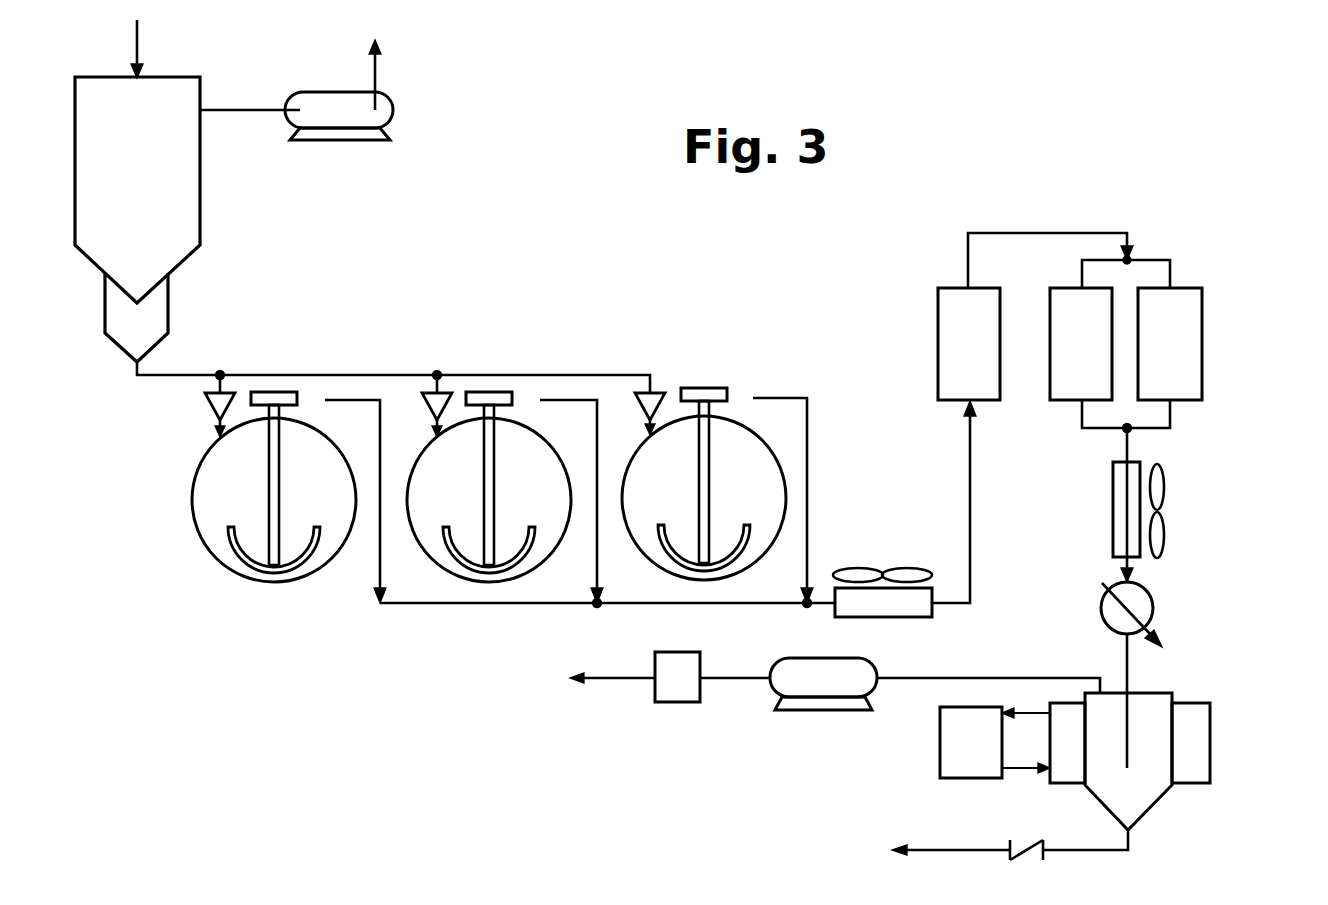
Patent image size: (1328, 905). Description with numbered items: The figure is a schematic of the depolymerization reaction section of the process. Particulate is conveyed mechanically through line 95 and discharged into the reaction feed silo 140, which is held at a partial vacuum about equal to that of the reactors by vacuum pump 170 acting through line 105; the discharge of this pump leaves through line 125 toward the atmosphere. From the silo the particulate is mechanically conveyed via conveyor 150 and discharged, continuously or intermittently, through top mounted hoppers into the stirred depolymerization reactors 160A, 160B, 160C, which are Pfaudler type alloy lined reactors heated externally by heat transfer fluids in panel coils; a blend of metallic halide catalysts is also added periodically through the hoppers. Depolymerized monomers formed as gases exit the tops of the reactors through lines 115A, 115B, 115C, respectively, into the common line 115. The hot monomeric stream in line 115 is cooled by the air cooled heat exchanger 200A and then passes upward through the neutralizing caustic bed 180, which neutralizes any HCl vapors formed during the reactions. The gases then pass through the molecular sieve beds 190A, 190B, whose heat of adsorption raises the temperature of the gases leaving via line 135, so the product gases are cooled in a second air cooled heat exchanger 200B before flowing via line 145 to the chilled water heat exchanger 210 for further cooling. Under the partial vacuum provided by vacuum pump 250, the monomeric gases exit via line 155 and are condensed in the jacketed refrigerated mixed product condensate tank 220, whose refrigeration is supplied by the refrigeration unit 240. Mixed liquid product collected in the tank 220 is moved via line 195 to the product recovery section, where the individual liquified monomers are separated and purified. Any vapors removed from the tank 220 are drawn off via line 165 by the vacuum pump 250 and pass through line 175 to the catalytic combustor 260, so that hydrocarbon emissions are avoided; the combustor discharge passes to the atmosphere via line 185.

The line 95 is at (140, 52).
The line 105 is at (240, 108).
The line 125 is at (377, 86).
The reaction feed silo 140 is at (202, 198).
The vacuum pump 170 is at (382, 138).
The conveyor 150 is at (380, 373).
The depolymerization reactor 160A is at (260, 505).
The depolymerization reactor 160B is at (475, 505).
The depolymerization reactor 160C is at (688, 503).
The line 115 is at (435, 606).
The line 115A is at (377, 579).
The line 115B is at (590, 560).
The line 115C is at (808, 552).
The air cooled heat exchanger 200A is at (883, 572).
The neutralizing caustic bed 180 is at (938, 350).
The molecular sieve bed 190A is at (1073, 402).
The molecular sieve bed 190B is at (1202, 355).
The line 135 is at (1127, 440).
The second air cooled heat exchanger 200B is at (1163, 503).
The line 145 is at (1123, 565).
The chilled water heat exchanger 210 is at (1157, 612).
The line 155 is at (1127, 676).
The mixed product condensate tank 220 is at (1138, 795).
The refrigeration unit 240 is at (953, 782).
The line 195 is at (1093, 850).
The line 165 is at (918, 677).
The line 185 is at (633, 677).
The catalytic combustor 260 is at (672, 705).
The line 175 is at (750, 680).
The vacuum pump 250 is at (823, 692).